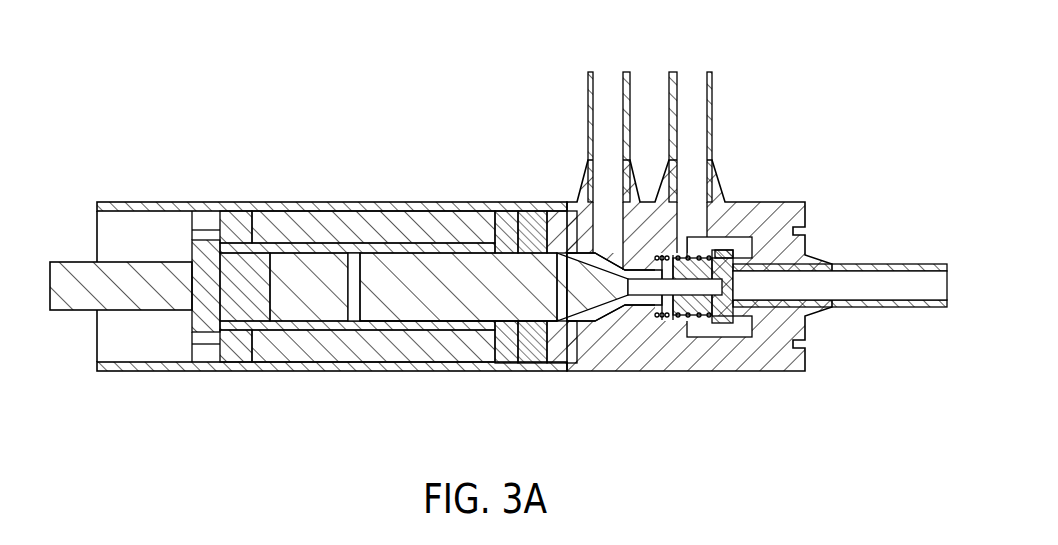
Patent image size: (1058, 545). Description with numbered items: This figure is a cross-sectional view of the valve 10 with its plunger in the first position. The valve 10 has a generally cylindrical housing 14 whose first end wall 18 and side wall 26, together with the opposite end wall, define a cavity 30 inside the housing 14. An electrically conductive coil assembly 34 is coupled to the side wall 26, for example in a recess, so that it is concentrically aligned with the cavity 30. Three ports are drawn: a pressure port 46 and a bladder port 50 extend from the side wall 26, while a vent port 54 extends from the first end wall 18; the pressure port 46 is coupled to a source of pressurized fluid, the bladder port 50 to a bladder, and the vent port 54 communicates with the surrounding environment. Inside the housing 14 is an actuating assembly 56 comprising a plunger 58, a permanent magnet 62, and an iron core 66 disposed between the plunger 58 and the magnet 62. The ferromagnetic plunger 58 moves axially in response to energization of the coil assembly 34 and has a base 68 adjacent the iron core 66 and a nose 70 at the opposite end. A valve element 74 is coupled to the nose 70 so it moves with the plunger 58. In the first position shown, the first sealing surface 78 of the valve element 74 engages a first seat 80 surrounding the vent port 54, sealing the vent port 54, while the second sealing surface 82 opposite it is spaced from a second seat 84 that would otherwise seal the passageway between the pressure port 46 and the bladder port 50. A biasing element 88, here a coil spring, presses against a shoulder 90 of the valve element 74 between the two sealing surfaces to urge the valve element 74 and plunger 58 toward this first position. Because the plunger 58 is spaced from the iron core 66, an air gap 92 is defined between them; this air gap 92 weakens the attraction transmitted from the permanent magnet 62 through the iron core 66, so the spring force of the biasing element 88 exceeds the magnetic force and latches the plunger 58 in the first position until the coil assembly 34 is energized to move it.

The valve 10 is at (806, 85).
The housing 14 is at (132, 174).
The first end wall 18 is at (802, 212).
The side wall 26 is at (506, 203).
The cavity 30 is at (606, 322).
The coil assembly 34 is at (399, 198).
The pressure port 46 is at (588, 108).
The bladder port 50 is at (713, 107).
The vent port 54 is at (915, 264).
The actuating assembly 56 is at (461, 234).
The plunger 58 is at (457, 307).
The permanent magnet 62 is at (247, 310).
The iron core 66 is at (327, 310).
The base 68 is at (372, 320).
The nose 70 is at (633, 300).
The valve element 74 is at (698, 303).
The first sealing surface 78 is at (740, 256).
The first seat 80 is at (768, 240).
The second sealing surface 82 is at (655, 256).
The second seat 84 is at (653, 315).
The biasing element 88 is at (737, 245).
The shoulder 90 is at (723, 323).
The air gap 92 is at (350, 250).